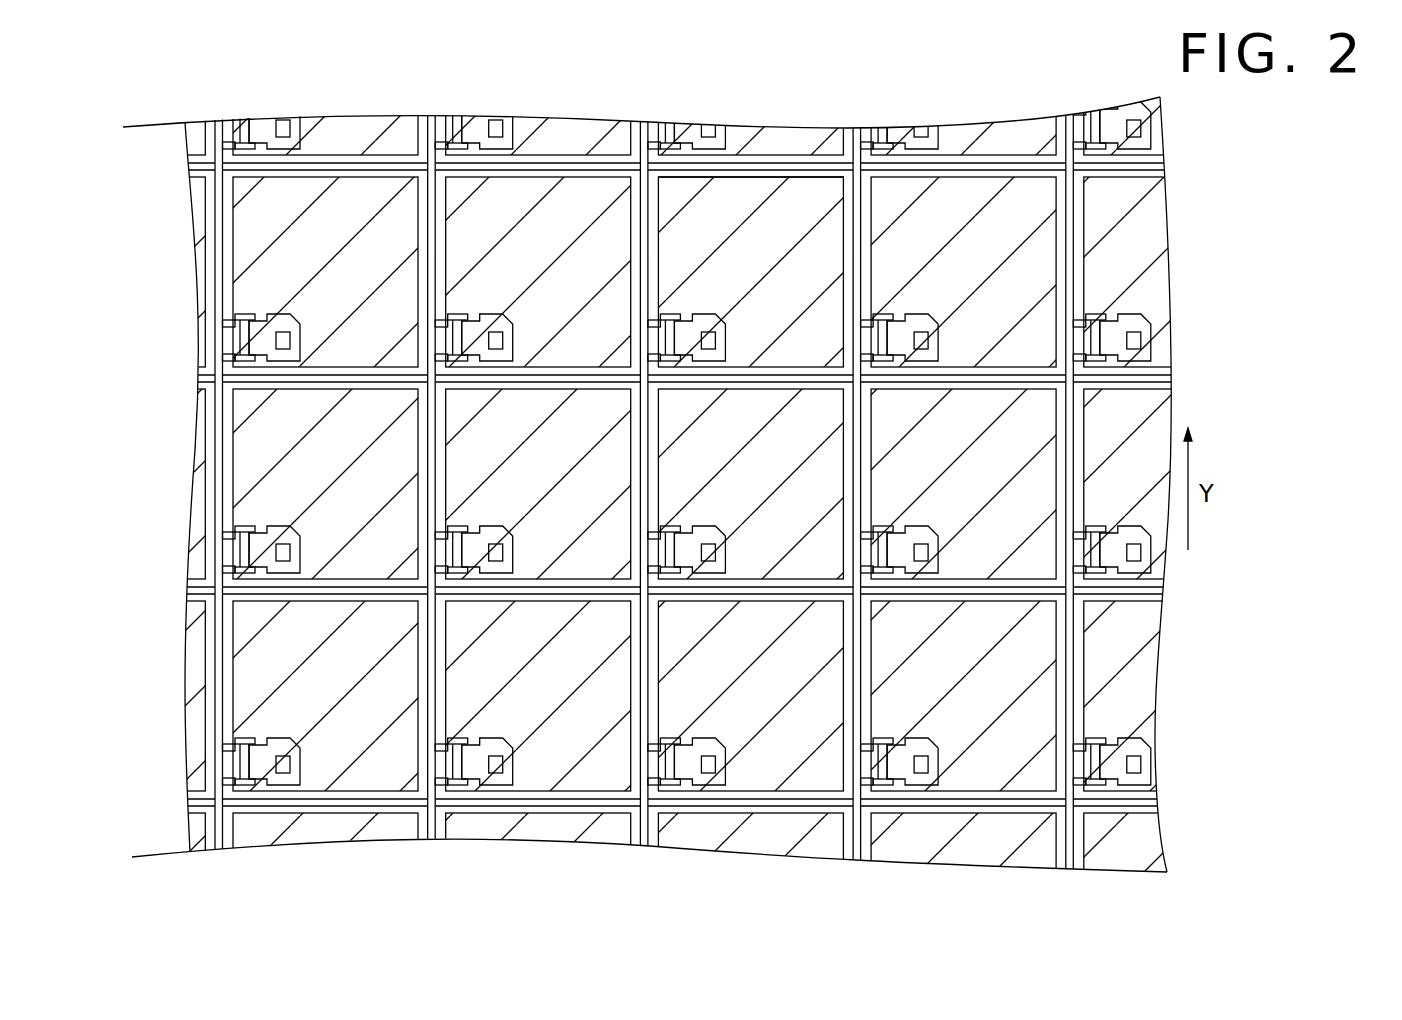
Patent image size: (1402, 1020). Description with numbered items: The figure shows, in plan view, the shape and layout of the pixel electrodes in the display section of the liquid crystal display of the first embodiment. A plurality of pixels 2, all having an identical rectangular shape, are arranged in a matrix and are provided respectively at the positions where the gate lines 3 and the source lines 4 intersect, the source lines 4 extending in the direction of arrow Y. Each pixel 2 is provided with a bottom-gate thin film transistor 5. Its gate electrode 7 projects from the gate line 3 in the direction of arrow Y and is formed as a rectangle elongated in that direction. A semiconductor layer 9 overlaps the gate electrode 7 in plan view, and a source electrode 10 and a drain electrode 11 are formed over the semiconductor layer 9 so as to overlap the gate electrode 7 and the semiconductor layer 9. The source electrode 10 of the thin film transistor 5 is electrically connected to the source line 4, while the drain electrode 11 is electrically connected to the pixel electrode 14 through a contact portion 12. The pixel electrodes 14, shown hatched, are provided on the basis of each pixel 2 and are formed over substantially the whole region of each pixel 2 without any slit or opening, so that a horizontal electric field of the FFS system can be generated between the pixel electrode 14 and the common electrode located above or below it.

The pixel 2 is at (750, 195).
The gate line 3 is at (803, 162).
The source line 4 is at (640, 218).
The thin film transistor 5 is at (747, 325).
The gate electrode 7 is at (674, 313).
The semiconductor layer 9 is at (672, 356).
The source electrode 10 is at (650, 352).
The drain electrode 11 is at (686, 353).
The contact portion 12 is at (708, 338).
The pixel electrode 14 is at (708, 183).